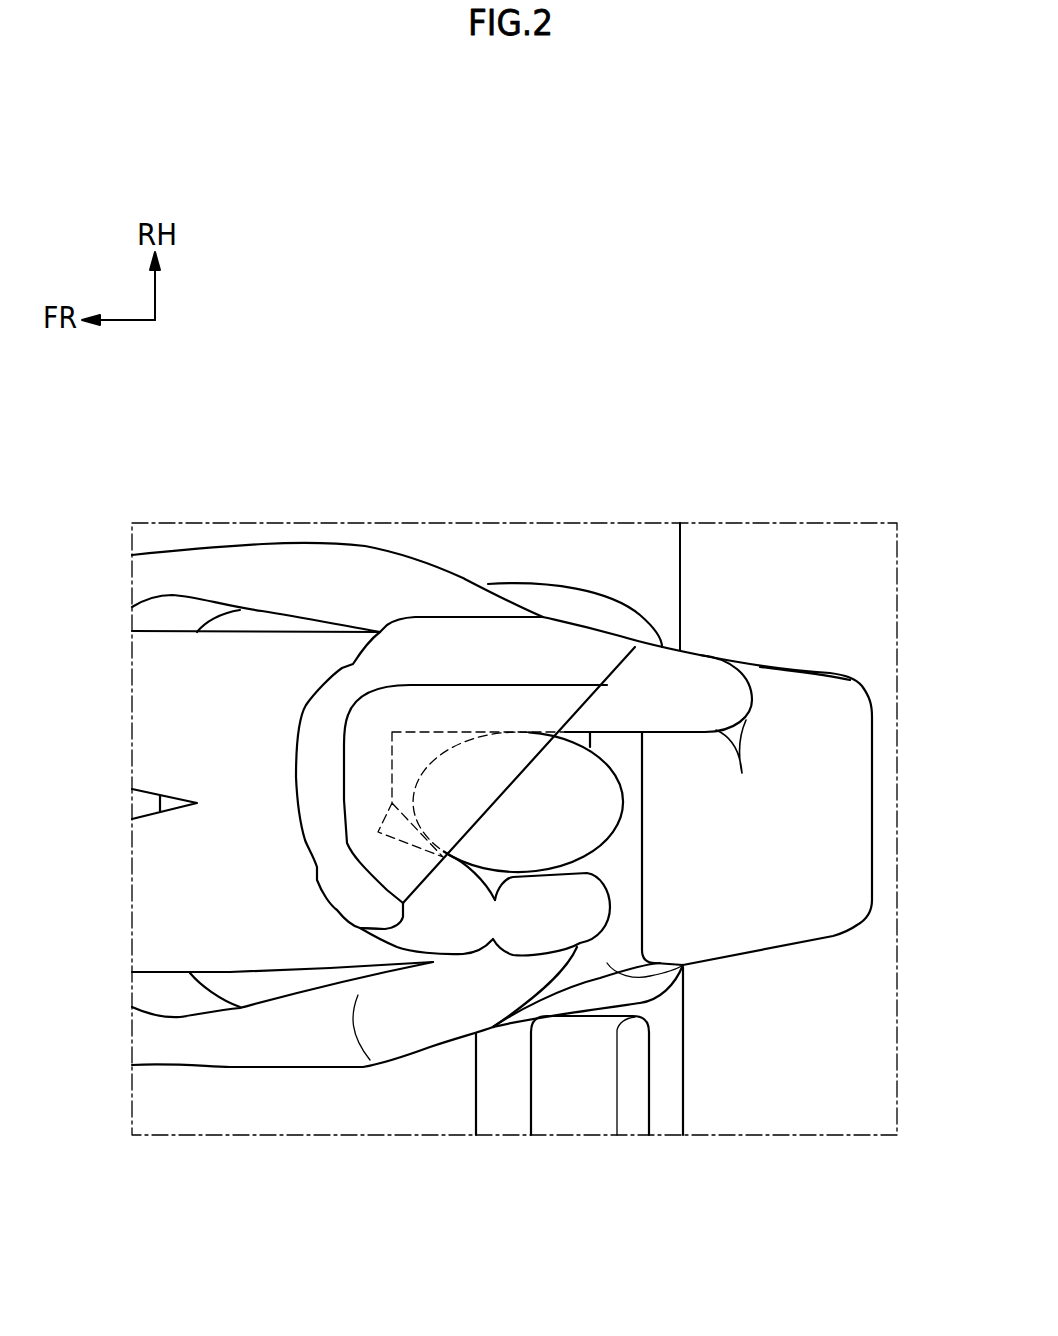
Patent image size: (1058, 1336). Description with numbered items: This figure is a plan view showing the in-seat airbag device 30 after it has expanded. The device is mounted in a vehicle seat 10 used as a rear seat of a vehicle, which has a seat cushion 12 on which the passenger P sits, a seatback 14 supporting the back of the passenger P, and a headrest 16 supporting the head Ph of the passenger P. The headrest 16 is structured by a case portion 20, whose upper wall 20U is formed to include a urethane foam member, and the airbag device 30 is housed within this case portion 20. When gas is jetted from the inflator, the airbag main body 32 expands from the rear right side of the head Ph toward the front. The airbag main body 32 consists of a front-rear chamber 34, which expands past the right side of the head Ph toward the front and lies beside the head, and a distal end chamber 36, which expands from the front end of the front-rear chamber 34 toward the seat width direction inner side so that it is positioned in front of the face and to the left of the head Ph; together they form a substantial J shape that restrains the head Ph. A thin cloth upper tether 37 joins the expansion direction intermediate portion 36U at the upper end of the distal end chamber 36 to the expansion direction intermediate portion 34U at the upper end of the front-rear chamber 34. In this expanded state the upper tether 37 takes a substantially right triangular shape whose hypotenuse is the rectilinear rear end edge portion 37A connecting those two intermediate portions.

The vehicle seat 10 is at (643, 600).
The seat cushion 12 is at (205, 987).
The seatback 14 is at (681, 967).
The headrest 16 is at (639, 867).
The case portion 20 is at (830, 670).
The upper wall 20U is at (850, 747).
The in-seat airbag device 30 is at (430, 836).
The airbag main body 32 is at (700, 653).
The front-rear chamber 34 is at (497, 640).
The expansion direction intermediate portion 34U is at (632, 647).
The distal end chamber 36 is at (467, 954).
The expansion direction intermediate portion 36U is at (357, 927).
The upper tether 37 is at (372, 780).
The rear end edge portion 37A is at (490, 812).
The head Ph is at (612, 803).
The passenger P is at (360, 1067).